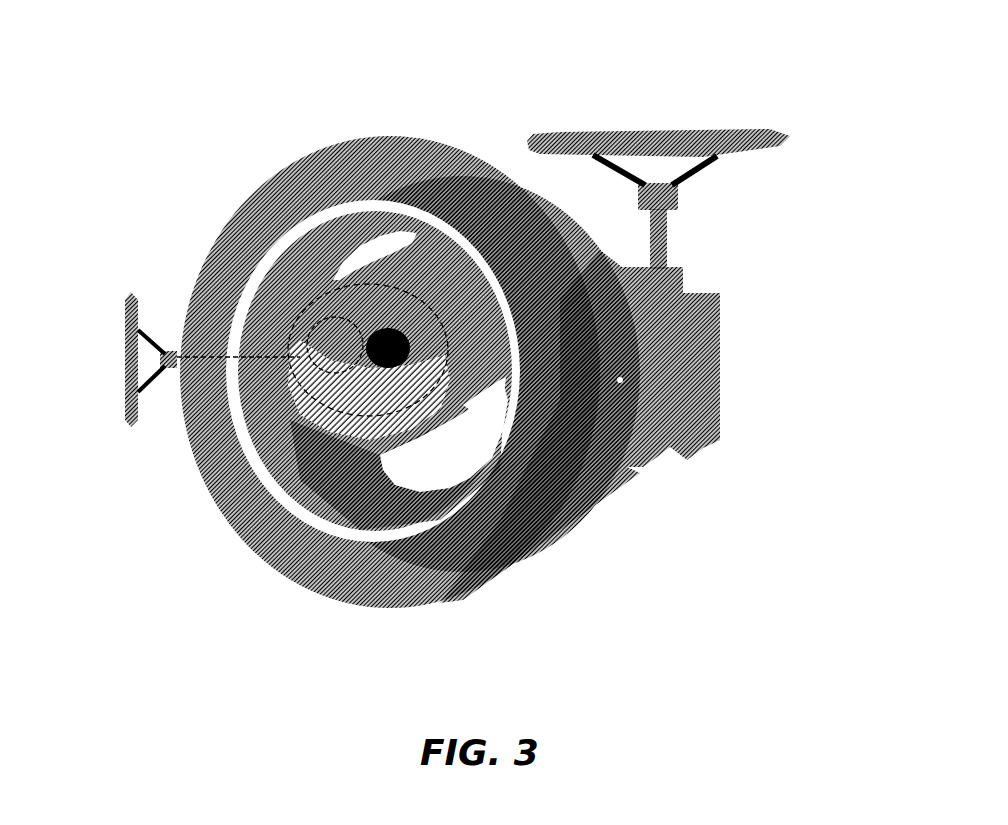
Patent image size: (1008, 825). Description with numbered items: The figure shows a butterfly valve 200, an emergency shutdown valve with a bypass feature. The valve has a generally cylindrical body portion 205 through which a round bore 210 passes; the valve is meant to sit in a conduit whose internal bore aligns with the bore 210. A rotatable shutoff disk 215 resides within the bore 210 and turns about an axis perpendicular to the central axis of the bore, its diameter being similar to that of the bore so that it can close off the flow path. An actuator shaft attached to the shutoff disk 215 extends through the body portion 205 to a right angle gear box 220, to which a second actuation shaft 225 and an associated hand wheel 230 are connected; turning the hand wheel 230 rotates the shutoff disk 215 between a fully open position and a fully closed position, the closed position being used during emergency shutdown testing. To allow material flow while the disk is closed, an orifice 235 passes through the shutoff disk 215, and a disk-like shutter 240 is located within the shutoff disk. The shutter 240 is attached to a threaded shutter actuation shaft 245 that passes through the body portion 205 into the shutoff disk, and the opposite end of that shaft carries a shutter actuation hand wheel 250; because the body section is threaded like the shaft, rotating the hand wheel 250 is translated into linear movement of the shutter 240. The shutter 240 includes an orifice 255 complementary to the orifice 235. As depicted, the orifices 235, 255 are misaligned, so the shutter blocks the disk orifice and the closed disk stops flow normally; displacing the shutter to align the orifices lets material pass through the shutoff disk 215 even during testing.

The butterfly valve 200 is at (463, 336).
The body portion 205 is at (366, 143).
The bore 210 is at (483, 474).
The shutoff disk 215 is at (362, 440).
The right angle gear box 220 is at (712, 366).
The second actuation shaft 225 is at (667, 251).
The hand wheel 230 is at (780, 137).
The orifice 235 is at (400, 332).
The shutter 240 is at (318, 410).
The shutter actuation shaft 245 is at (172, 362).
The shutter actuation hand wheel 250 is at (125, 343).
The orifice 255 is at (322, 330).